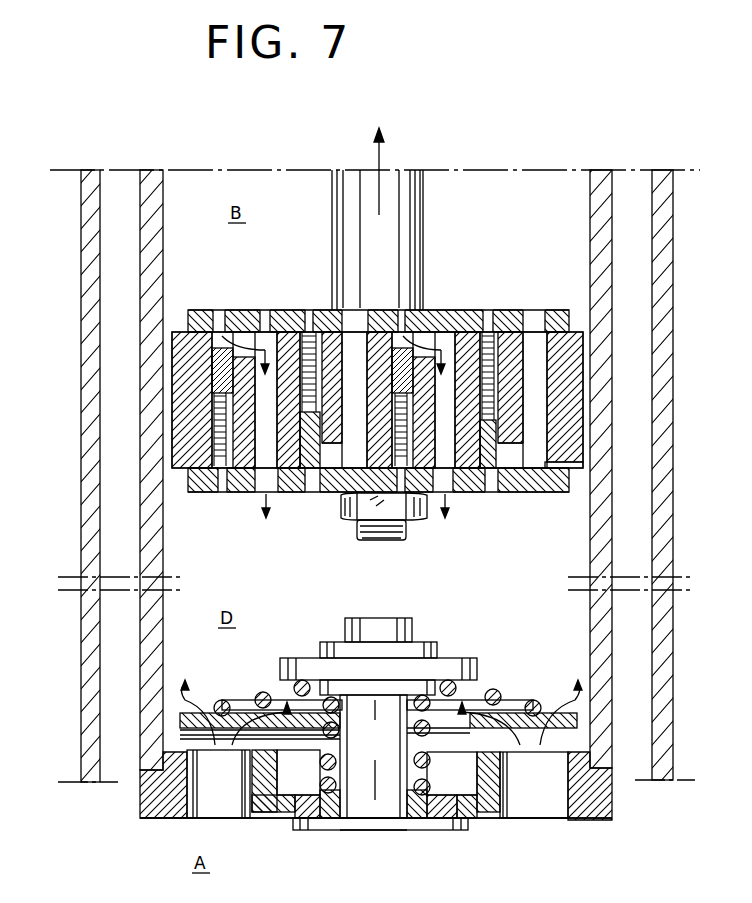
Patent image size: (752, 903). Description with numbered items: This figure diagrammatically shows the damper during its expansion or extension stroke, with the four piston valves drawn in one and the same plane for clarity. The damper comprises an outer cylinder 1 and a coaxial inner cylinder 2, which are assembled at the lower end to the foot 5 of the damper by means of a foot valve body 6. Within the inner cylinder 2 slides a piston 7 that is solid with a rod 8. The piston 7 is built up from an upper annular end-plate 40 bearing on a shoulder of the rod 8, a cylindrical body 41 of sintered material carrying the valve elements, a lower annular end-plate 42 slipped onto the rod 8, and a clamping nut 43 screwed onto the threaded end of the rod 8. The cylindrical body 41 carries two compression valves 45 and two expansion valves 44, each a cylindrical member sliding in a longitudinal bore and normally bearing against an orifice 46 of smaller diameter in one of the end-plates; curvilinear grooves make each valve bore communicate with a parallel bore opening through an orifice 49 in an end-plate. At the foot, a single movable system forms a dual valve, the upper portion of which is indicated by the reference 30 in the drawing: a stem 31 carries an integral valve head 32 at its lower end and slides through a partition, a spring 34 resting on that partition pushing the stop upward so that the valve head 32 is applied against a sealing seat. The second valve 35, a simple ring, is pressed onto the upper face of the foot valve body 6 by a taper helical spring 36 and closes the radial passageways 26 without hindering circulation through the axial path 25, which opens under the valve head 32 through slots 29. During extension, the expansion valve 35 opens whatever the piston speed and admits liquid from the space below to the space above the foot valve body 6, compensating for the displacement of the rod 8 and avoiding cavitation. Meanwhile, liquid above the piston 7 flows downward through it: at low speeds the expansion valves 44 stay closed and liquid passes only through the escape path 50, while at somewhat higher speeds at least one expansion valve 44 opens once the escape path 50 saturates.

The outer cylinder 1 is at (94, 218).
The inner cylinder 2 is at (142, 218).
The foot 5 is at (130, 797).
The foot valve body 6 is at (165, 810).
The piston 7 is at (192, 416).
The rod 8 is at (356, 176).
The axial path 25 is at (310, 781).
The radial passageways 26 is at (224, 811).
The slots 29 is at (280, 822).
The upper flange head 30 is at (424, 638).
The stem 31 is at (380, 756).
The valve head 32 is at (400, 830).
The spring 34 is at (420, 730).
The expansion valve 35 is at (200, 714).
The taper helical spring 36 is at (494, 690).
The upper annular end-plate 40 is at (565, 310).
The cylindrical body 41 is at (375, 400).
The lower annular end-plate 42 is at (550, 492).
The clamping nut 43 is at (346, 510).
The expansion valves 44 is at (214, 374).
The compression valves 45 is at (310, 445).
The orifice 46 is at (220, 312).
The orifice 49 is at (358, 310).
The escape path 50 is at (585, 466).